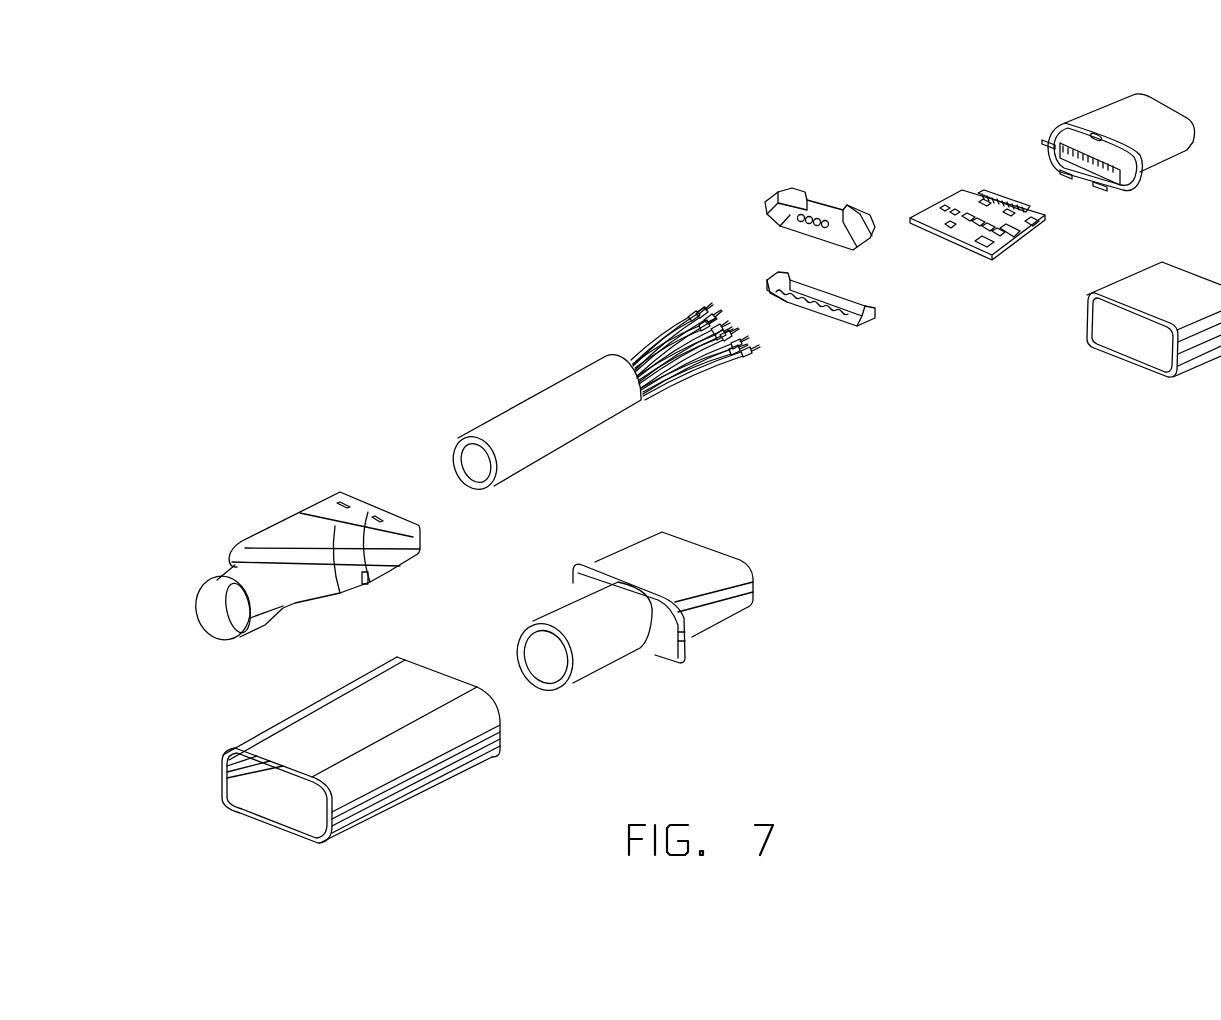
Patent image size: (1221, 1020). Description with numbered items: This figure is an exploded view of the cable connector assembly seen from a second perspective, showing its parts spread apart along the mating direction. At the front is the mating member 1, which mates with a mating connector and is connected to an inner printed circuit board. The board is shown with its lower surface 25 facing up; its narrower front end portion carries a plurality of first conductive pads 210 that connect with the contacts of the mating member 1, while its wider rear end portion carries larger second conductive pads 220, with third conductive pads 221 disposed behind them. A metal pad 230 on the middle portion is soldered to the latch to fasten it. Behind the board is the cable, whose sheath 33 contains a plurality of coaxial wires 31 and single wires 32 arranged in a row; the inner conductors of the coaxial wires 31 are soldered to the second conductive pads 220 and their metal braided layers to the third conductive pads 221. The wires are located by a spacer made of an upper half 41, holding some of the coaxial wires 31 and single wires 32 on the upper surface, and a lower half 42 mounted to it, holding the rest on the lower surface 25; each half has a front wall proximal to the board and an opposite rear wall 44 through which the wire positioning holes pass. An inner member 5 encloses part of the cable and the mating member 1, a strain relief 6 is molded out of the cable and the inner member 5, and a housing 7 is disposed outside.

The mating member 1 is at (1110, 120).
The first conductive pads 210 is at (997, 193).
The second conductive pads 220 is at (1012, 235).
The third conductive pads 221 is at (987, 240).
The metal pad 230 is at (1037, 225).
The lower surface 25 is at (962, 233).
The coaxial wires 31 is at (658, 328).
The single wires 32 is at (703, 327).
The sheath 33 is at (552, 410).
The upper half 41 is at (866, 322).
The lower half 42 is at (805, 188).
The rear wall 44 is at (790, 217).
The inner member 5 is at (303, 535).
The strain relief 6 is at (678, 558).
The housing 7 is at (345, 720).